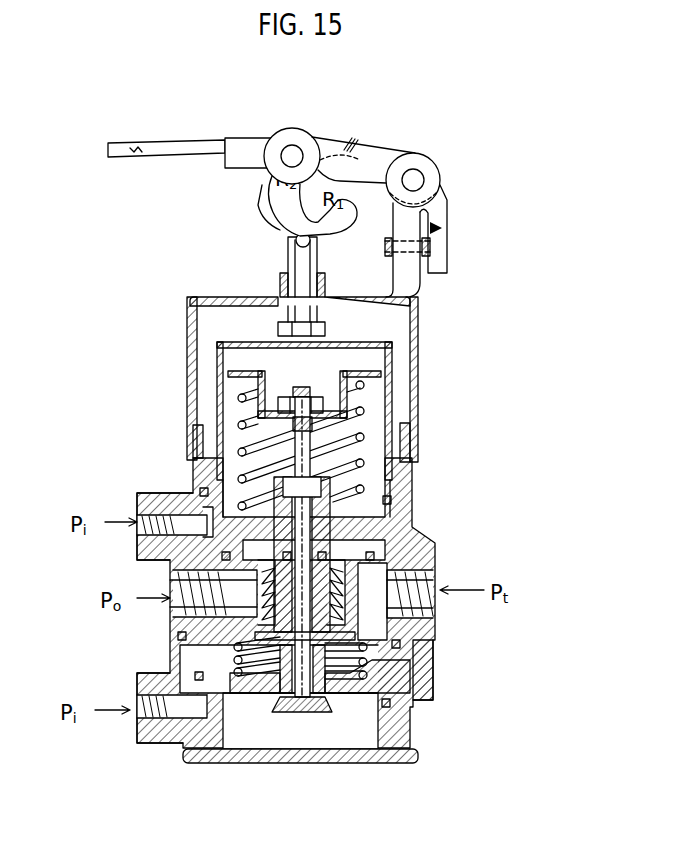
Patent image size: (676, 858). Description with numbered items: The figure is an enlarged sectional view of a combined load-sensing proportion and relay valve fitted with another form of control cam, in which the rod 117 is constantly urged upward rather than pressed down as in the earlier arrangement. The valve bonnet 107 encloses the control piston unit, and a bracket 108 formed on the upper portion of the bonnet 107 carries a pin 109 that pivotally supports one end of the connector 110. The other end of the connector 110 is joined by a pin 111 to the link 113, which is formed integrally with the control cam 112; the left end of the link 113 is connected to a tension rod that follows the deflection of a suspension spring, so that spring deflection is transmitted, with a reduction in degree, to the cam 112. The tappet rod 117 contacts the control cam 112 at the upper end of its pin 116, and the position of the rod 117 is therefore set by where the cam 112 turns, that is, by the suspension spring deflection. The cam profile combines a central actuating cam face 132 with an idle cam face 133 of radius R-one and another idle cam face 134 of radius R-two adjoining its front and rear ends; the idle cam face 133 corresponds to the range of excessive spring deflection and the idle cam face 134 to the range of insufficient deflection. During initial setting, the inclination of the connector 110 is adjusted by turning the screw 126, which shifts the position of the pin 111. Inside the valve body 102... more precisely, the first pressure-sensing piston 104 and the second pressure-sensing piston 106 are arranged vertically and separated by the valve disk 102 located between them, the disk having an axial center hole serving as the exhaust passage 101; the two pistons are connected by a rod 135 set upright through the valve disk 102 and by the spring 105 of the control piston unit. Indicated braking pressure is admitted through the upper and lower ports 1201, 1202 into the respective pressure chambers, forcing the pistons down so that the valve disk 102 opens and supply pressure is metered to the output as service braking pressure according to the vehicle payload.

The exhaust passage 101 is at (188, 332).
The valve disk 102 is at (400, 500).
The first pressure-sensing piston 104 is at (413, 667).
The spring 105 is at (362, 385).
The second pressure-sensing piston 106 is at (407, 450).
The valve bonnet 107 is at (197, 300).
The bracket 108 is at (410, 287).
The pin 109 is at (420, 180).
The connector 110 is at (365, 150).
The pin 111 is at (293, 150).
The control cam 112 is at (238, 160).
The link 113 is at (130, 158).
The pin 116 is at (297, 240).
The rod 117 is at (317, 316).
The screw 126 is at (430, 250).
The actuating cam face 132 is at (287, 213).
The idle cam face 133 is at (318, 233).
The idle cam face 134 is at (256, 186).
The rod 135 is at (305, 453).
The upper port 1201 is at (137, 497).
The lower port 1202 is at (140, 710).